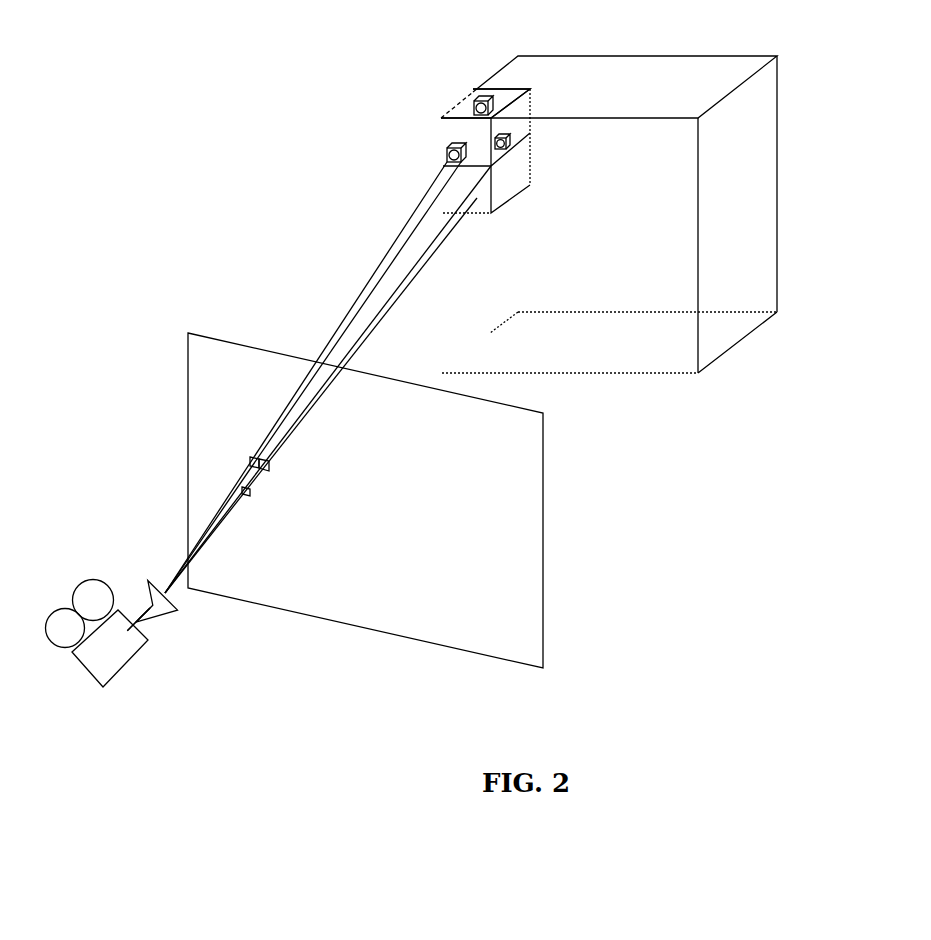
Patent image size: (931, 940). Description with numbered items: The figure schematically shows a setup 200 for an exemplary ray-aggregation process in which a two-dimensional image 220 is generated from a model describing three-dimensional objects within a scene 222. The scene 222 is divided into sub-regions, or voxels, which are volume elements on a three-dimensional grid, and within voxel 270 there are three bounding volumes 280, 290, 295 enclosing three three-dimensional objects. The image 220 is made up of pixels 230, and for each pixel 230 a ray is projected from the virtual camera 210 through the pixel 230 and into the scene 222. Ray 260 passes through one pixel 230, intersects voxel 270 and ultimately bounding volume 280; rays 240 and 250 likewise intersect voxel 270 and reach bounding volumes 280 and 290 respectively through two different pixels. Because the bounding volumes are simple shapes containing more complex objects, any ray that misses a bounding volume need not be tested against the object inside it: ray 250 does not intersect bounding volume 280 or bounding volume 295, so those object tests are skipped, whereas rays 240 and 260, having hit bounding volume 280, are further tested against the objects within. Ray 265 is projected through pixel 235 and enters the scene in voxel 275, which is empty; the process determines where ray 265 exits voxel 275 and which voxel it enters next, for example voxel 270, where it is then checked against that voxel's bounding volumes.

The calibration system 200 is at (451, 700).
The virtual camera 210 is at (138, 656).
The 2D image 220 is at (545, 442).
The scene 222 is at (597, 53).
The pixel 230 is at (250, 461).
The pixel 235 is at (250, 496).
The ray 240 is at (412, 230).
The ray 250 is at (362, 325).
The ray 260 is at (418, 208).
The ray 265 is at (455, 225).
The voxel 270 is at (460, 103).
The voxel 275 is at (530, 165).
The bounding volume 280 is at (456, 145).
The bounding volume 290 is at (507, 139).
The bounding volume 295 is at (488, 96).